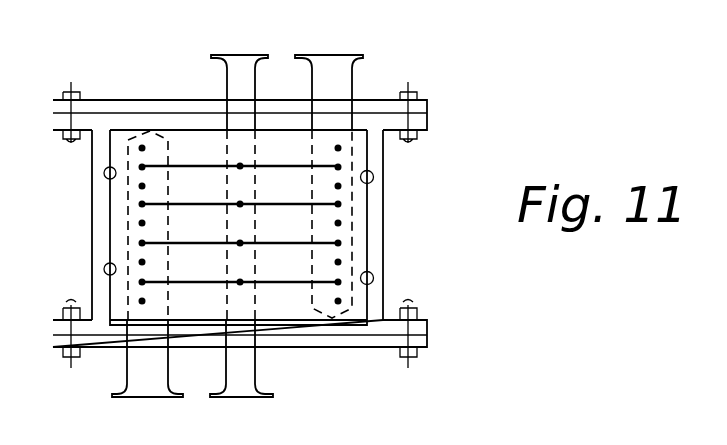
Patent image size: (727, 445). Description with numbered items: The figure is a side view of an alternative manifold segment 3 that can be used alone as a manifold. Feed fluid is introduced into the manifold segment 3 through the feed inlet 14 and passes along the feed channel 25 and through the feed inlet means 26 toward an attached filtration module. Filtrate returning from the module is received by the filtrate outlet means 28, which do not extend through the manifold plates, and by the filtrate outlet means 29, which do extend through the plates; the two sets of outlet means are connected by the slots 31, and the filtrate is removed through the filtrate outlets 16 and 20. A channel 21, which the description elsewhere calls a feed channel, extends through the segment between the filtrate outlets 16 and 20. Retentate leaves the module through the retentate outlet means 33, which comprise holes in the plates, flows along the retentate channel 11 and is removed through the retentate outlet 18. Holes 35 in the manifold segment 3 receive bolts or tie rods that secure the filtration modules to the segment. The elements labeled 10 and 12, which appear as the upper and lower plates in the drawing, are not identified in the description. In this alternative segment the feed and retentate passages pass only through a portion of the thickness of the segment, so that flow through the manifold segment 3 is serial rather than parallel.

The manifold segment 3 is at (392, 224).
The upper end plate 10 is at (187, 100).
The lower end plate 12 is at (348, 348).
The feed inlet 14 is at (137, 377).
The filtrate outlet 16 is at (252, 398).
The retentate outlet 18 is at (331, 54).
The filtrate outlet 20 is at (245, 54).
The feed channel 21 is at (242, 152).
The feed channel 25 is at (153, 262).
The feed inlet means 26 is at (138, 146).
The filtrate outlet means 28 is at (142, 167).
The filtrate outlet means 29 is at (240, 165).
The slots 31 is at (316, 175).
The retentate outlet means 33 is at (338, 148).
The retentate channel 11 is at (320, 224).
The holes 35 is at (104, 269).